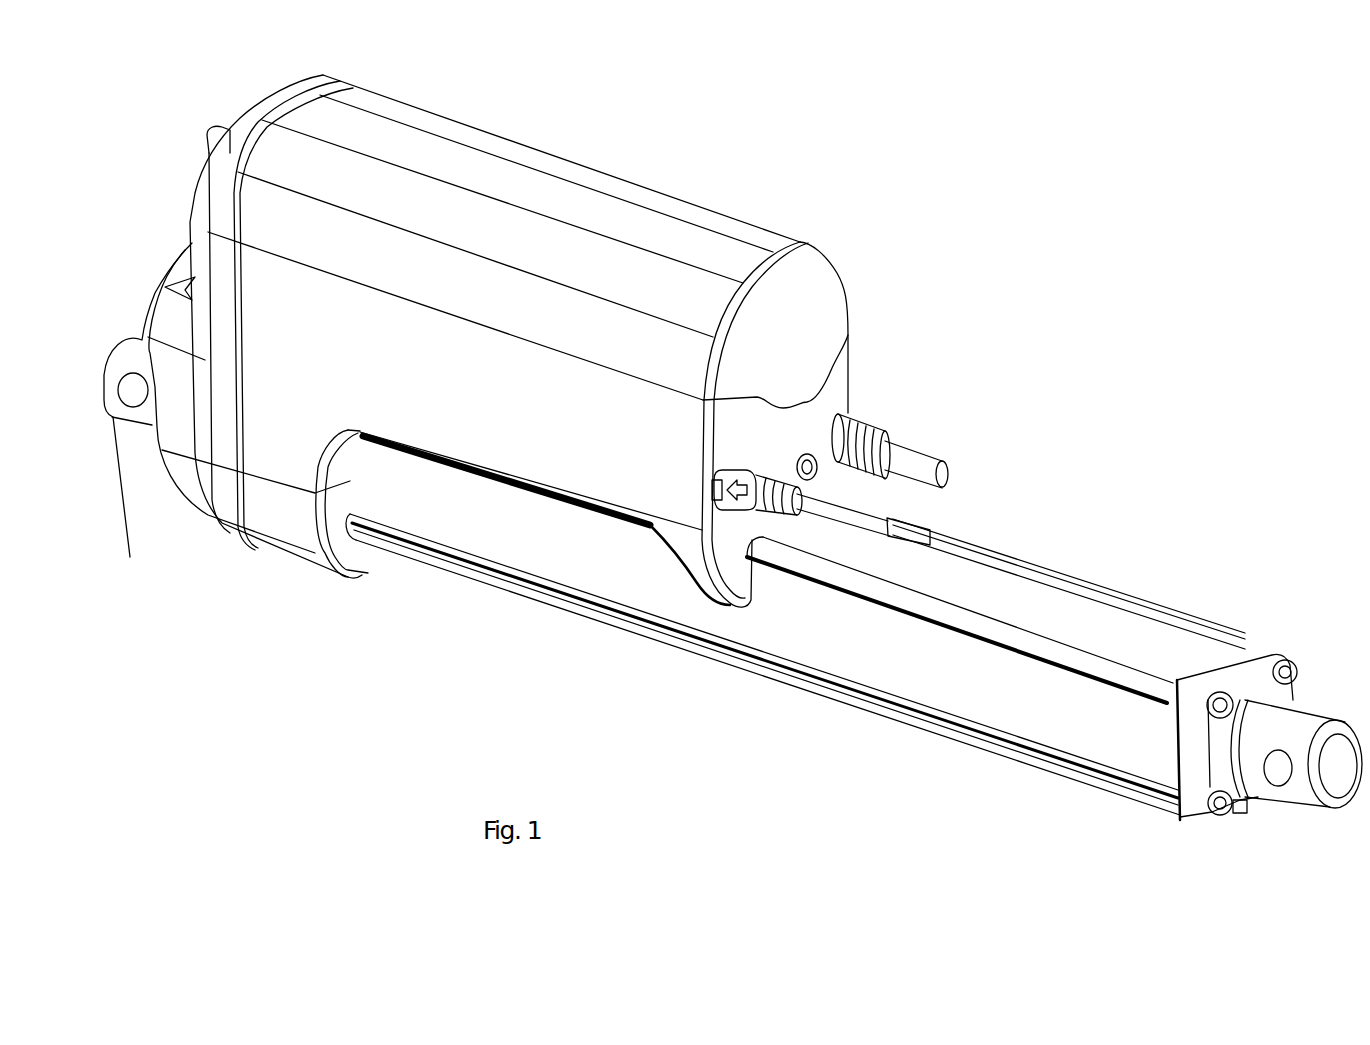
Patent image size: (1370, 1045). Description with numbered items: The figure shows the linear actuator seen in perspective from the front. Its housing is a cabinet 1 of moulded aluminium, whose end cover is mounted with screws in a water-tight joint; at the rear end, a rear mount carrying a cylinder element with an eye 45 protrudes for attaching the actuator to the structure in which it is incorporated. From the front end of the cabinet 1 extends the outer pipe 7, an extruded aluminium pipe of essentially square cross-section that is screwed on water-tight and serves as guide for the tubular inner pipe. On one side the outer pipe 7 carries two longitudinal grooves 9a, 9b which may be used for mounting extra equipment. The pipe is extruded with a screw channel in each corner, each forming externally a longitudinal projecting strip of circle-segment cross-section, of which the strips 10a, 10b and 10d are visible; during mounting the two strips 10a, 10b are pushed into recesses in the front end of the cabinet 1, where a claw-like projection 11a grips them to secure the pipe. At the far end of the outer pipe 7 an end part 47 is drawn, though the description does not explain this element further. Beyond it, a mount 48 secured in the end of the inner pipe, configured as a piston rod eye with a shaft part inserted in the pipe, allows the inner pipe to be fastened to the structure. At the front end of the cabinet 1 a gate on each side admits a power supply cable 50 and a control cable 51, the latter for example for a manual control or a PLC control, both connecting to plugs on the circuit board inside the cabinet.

The cabinet 1 is at (483, 167).
The outer pipe 7 is at (1055, 603).
The longitudinal groove 9a is at (1237, 797).
The longitudinal groove 9b is at (1262, 800).
The longitudinal projecting strip 10a is at (817, 570).
The longitudinal projecting strip 10b is at (970, 545).
The longitudinal projecting strip 10d is at (917, 723).
The claw-like projection 11a is at (730, 570).
The eye 45 is at (130, 557).
The end plate 47 is at (1193, 760).
The mount 48 is at (1300, 778).
The power supply cable 50 is at (880, 520).
The control cable 51 is at (915, 445).